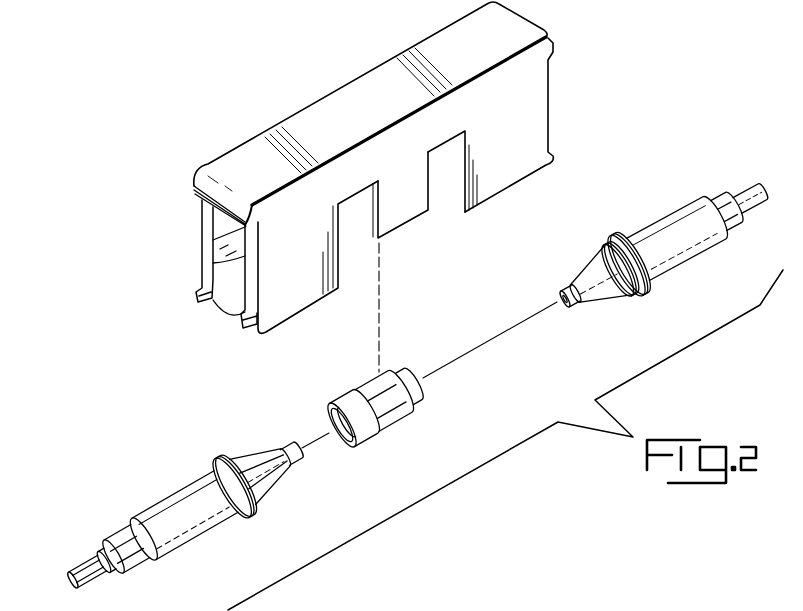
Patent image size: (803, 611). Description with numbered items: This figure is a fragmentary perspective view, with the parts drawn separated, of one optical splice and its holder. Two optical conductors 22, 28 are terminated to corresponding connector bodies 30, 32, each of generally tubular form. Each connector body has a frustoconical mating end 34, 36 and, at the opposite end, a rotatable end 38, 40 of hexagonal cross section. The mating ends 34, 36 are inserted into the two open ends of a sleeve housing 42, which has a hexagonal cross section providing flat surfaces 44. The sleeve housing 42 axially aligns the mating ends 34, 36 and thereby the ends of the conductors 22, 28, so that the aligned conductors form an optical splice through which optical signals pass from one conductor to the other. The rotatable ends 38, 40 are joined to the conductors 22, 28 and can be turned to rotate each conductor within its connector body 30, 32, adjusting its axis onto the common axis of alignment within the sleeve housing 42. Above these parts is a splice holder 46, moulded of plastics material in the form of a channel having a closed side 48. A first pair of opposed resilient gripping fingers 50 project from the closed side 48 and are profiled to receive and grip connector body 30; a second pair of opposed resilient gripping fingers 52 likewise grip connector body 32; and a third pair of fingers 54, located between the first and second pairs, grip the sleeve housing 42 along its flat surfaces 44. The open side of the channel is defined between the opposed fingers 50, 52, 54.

The conductor 22 is at (90, 558).
The conductor 28 is at (749, 186).
The connector body 30 is at (188, 484).
The connector body 32 is at (648, 235).
The mating end 34 is at (275, 448).
The mating end 36 is at (582, 273).
The rotatable end 38 is at (131, 530).
The rotatable end 40 is at (721, 194).
The sleeve housing 42 is at (338, 402).
The flat surfaces 44 is at (379, 388).
The splice holder 46 is at (548, 96).
The closed side 48 is at (377, 110).
The first pair of opposed resilient gripping fingers 50 is at (217, 305).
The second pair of opposed resilient gripping fingers 52 is at (485, 203).
The third pair of opposed resilient gripping fingers 54 is at (403, 220).